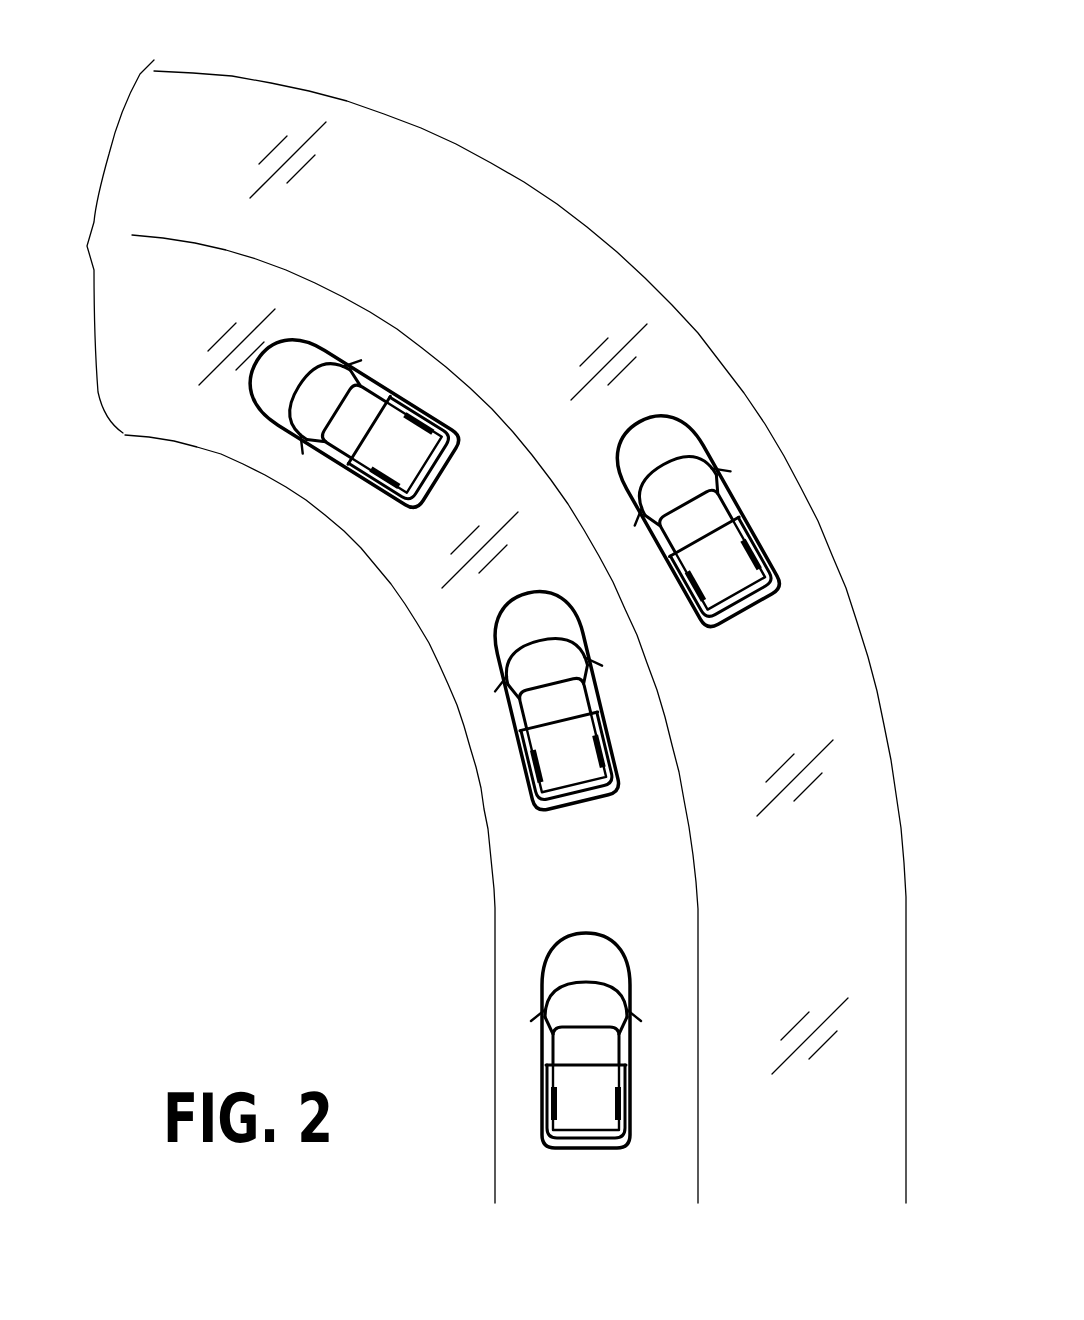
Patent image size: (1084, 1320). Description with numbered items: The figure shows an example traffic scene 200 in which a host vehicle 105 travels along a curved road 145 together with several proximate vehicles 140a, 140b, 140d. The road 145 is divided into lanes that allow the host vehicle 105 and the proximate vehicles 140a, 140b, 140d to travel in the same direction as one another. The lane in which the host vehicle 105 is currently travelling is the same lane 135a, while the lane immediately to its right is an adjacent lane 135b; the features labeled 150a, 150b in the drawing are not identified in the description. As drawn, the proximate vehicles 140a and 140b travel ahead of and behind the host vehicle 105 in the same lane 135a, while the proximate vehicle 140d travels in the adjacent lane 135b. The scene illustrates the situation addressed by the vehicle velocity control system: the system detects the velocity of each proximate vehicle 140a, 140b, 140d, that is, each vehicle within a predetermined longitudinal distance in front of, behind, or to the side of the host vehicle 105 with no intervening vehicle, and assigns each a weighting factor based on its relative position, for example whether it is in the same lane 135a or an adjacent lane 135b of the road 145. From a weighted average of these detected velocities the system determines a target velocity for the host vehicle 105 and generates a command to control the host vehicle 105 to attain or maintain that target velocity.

The driving environment 200 is at (503, 621).
The host vehicle 105 is at (612, 788).
The proximate vehicle 140a is at (447, 463).
The proximate vehicle 140b is at (620, 1140).
The proximate vehicle 140d is at (773, 596).
The road 145 is at (475, 631).
The lane 150a is at (823, 838).
The lane 150b is at (214, 119).
The same lane 135a is at (517, 1140).
The adjacent lane 135b is at (740, 1146).